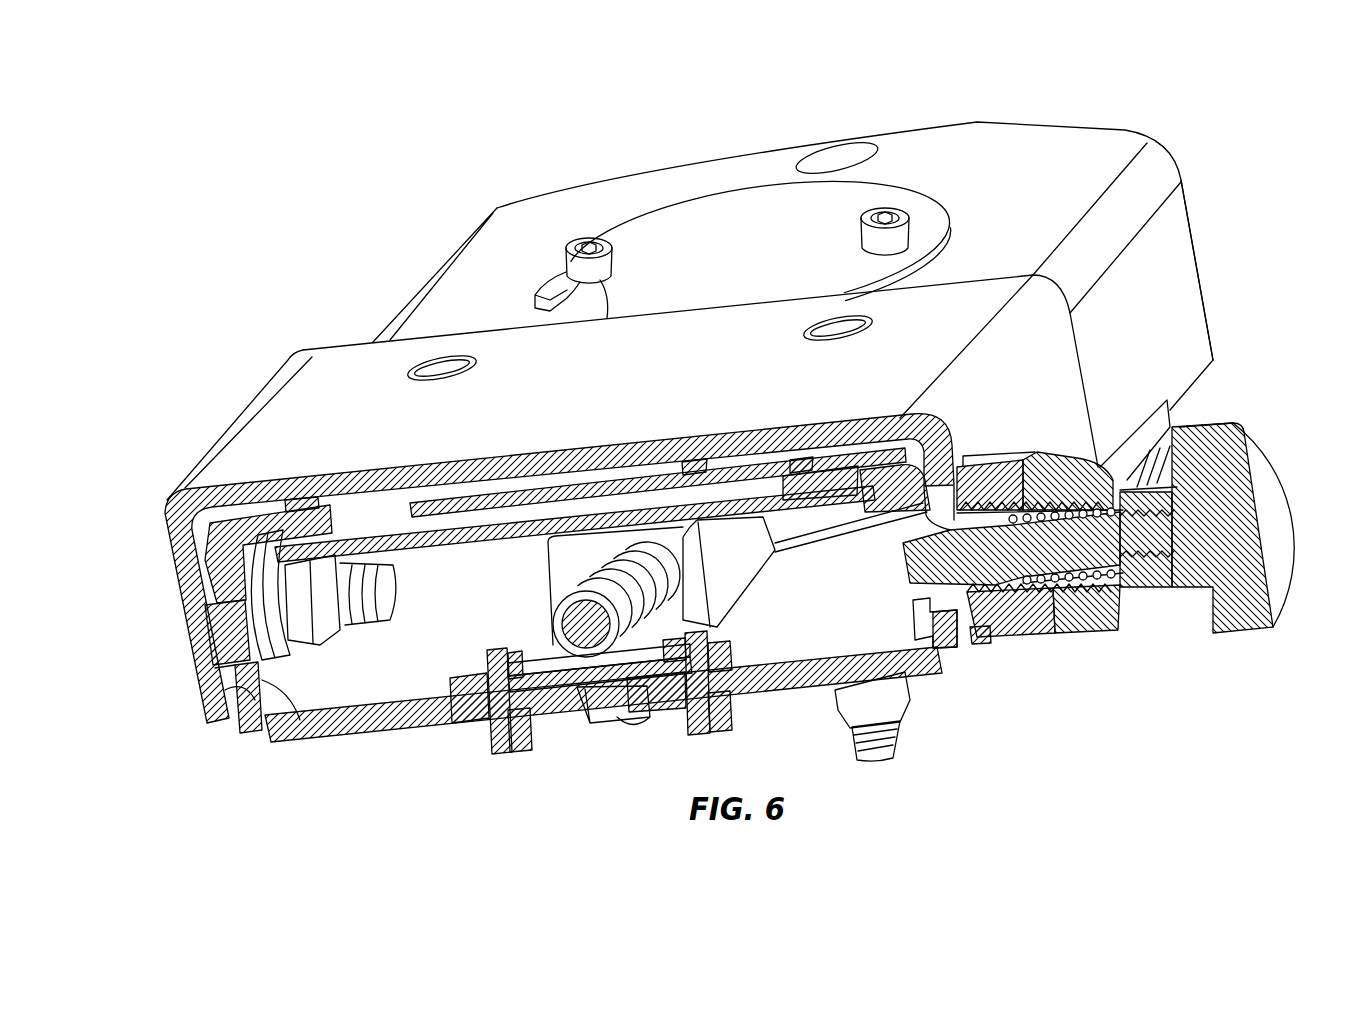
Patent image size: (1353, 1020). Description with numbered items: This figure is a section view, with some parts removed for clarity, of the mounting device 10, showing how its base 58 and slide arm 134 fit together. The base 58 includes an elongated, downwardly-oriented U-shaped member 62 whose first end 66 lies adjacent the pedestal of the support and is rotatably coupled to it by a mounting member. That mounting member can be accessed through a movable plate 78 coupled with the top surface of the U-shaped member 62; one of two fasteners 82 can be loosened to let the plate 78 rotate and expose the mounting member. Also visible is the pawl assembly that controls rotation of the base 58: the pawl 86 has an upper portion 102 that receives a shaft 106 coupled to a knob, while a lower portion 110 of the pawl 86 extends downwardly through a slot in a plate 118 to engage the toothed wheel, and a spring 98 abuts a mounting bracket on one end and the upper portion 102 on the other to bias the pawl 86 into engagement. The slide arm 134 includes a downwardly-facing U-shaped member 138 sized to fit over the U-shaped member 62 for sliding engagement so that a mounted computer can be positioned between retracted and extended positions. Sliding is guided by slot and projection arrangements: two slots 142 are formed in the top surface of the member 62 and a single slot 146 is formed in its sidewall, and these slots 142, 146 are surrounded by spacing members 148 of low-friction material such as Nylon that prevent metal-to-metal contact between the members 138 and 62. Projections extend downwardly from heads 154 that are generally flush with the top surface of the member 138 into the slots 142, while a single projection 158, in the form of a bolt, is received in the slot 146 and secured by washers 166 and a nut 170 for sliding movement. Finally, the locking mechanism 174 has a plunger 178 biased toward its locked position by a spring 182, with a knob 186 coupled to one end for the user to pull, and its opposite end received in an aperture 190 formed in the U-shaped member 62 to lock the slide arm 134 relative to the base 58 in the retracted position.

The mounting device 10 is at (268, 190).
The base 58 is at (1000, 147).
The U-shaped member 62 is at (1178, 290).
The first end 66 is at (1187, 222).
The movable plate 78 is at (717, 212).
The fasteners 82 is at (583, 240).
The pawl 86 is at (746, 597).
The spring 98 is at (548, 623).
The upper portion 102 is at (537, 565).
The shaft 106 is at (577, 640).
The lower portion 110 is at (610, 712).
The plate 118 is at (325, 725).
The slide arm 134 is at (250, 397).
The U-shaped member 138 is at (168, 530).
The slots 142 is at (367, 516).
The slot 146 is at (245, 645).
The spacing members 148 is at (302, 500).
The heads 154 is at (446, 382).
The projection 158 is at (245, 612).
The washers 166 is at (286, 690).
The nut 170 is at (342, 625).
The locking mechanism 174 is at (1077, 657).
The plunger 178 is at (1010, 632).
The spring 182 is at (1112, 626).
The knob 186 is at (1255, 443).
The aperture 190 is at (940, 602).